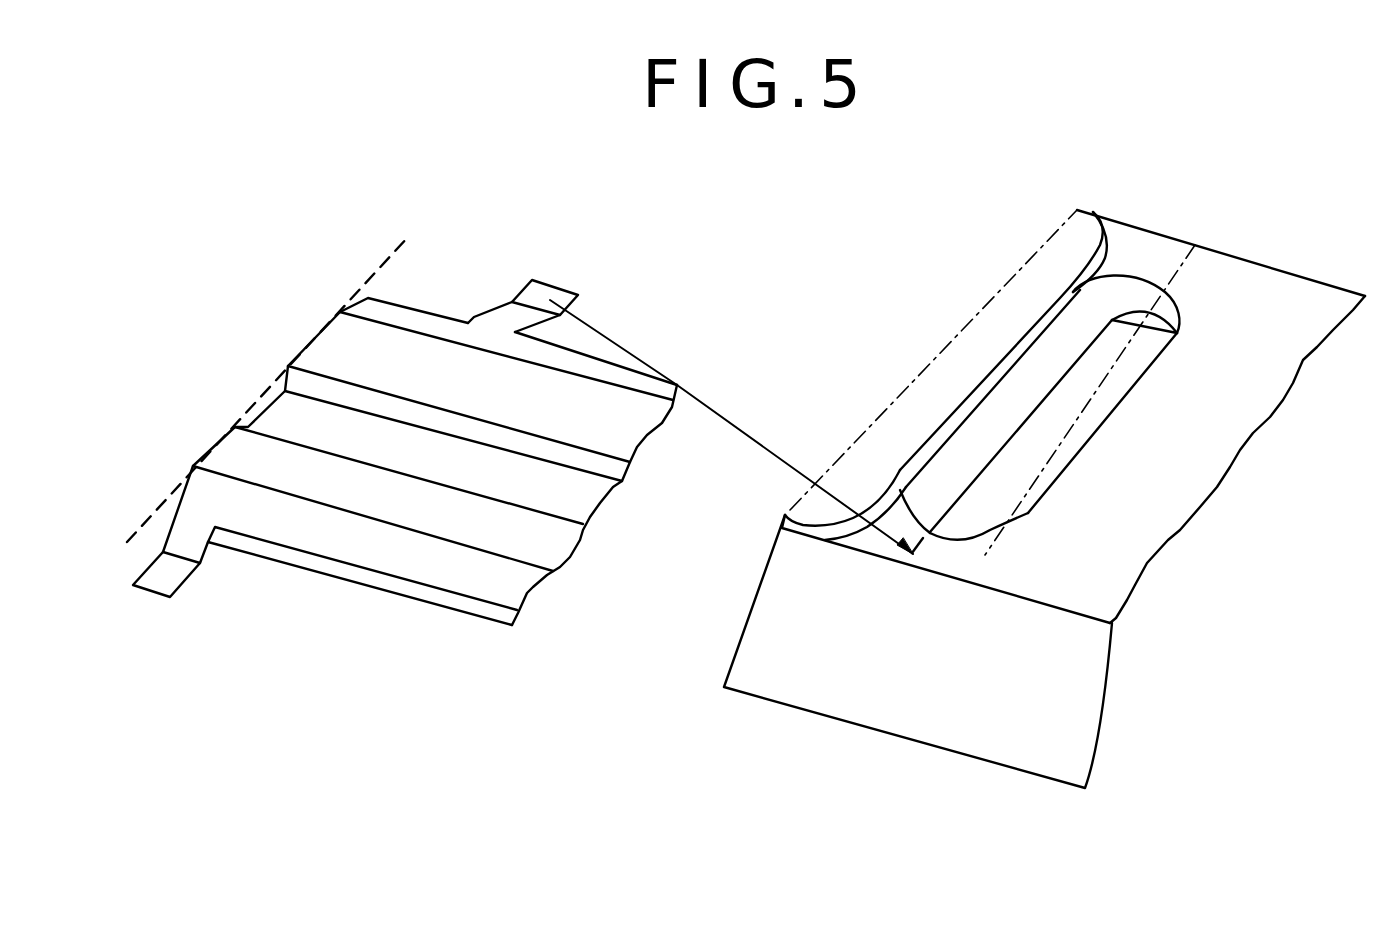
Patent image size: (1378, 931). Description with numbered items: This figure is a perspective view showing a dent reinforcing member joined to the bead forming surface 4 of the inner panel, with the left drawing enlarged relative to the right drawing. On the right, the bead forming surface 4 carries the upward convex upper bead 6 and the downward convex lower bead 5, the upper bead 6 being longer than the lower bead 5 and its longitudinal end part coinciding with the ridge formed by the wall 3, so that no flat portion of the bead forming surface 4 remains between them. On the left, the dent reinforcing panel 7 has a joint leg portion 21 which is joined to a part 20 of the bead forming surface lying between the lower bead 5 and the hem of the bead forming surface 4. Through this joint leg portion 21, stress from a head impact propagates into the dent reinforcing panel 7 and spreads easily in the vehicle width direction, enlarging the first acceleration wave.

The wall 3 is at (1080, 707).
The bead forming surface 4 is at (885, 517).
The lower bead 5 is at (1095, 413).
The upper bead 6 is at (922, 412).
The dent reinforcing panel 7 is at (213, 443).
The part of the bead forming surface 20 is at (913, 552).
The joint leg portion 21 is at (540, 295).